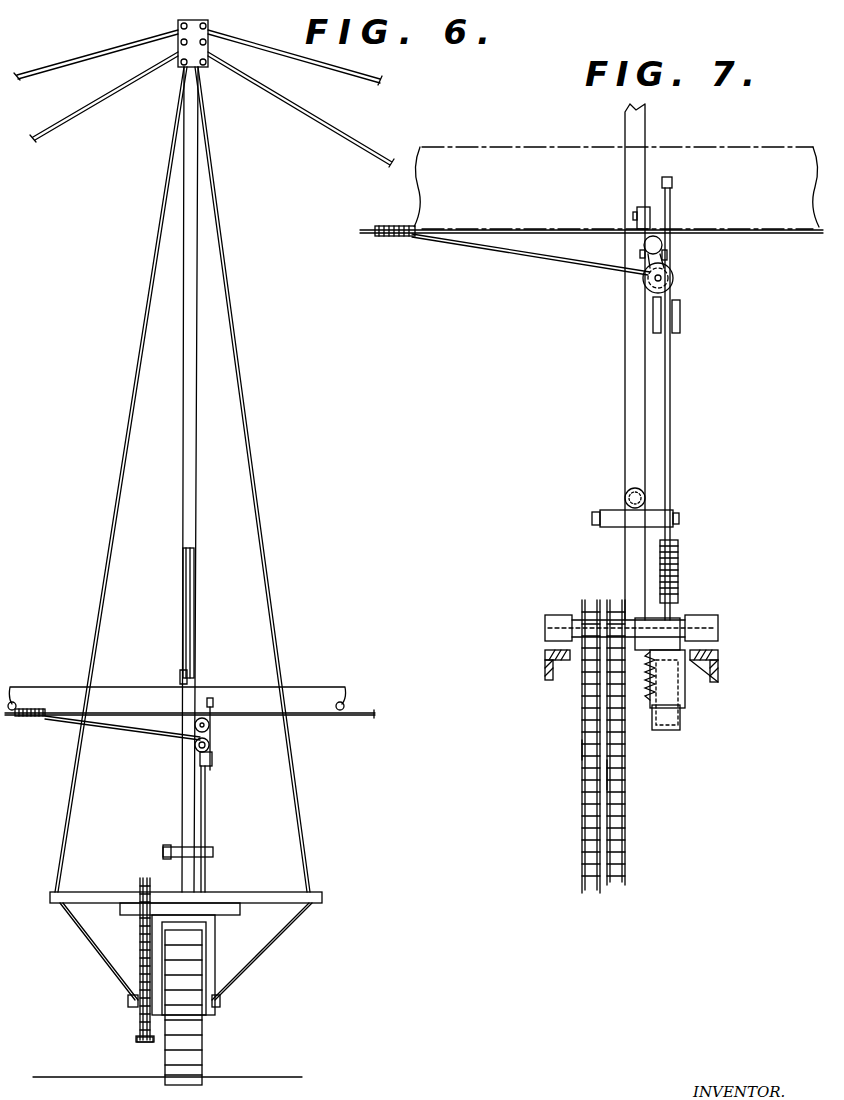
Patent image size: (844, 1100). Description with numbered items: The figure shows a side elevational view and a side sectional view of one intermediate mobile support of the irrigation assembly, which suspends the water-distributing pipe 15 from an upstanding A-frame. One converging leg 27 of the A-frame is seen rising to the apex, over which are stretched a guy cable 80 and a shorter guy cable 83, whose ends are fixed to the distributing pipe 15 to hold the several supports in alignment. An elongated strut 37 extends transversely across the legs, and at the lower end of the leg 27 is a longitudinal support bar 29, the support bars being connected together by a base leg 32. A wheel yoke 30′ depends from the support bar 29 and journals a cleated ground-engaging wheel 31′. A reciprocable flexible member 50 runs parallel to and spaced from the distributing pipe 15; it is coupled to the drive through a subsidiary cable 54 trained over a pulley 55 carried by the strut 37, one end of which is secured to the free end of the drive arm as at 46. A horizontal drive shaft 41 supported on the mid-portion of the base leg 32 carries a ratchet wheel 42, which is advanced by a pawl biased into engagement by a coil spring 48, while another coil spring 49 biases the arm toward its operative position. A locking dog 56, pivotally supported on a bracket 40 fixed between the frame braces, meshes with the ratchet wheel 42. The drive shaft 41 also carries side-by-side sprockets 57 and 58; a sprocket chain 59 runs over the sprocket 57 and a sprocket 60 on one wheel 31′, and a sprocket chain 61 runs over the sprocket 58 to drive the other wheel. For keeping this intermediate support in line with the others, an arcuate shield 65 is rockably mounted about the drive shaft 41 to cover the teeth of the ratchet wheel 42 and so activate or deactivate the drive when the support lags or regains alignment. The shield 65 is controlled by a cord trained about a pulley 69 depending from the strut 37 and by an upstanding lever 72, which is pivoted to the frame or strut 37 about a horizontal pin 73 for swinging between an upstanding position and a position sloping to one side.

In FIG. 6, the distributing pipe 15 is at (320, 690).
In FIG. 6, the leg 27 is at (196, 518).
In FIG. 6, the support bar 29 is at (290, 896).
In FIG. 6, the wheel yoke 30′ is at (210, 955).
In FIG. 6, the ground-engaging wheel 31′ is at (200, 1042).
In FIG. 7, the base leg 32 is at (719, 670).
In FIG. 6, the strut 37 is at (210, 725).
In FIG. 7, the strut 37 is at (640, 267).
In FIG. 7, the bracket 40 is at (626, 494).
In FIG. 7, the drive shaft 41 is at (720, 628).
In FIG. 7, the ratchet wheel 42 is at (688, 553).
In FIG. 7, the cable securing point 46 is at (680, 620).
In FIG. 7, the coil spring 48 is at (700, 651).
In FIG. 7, the coil spring 49 is at (645, 692).
In FIG. 6, the reciprocable flexible member 50 is at (330, 722).
In FIG. 7, the reciprocable flexible member 50 is at (452, 226).
In FIG. 6, the subsidiary cable 54 is at (210, 803).
In FIG. 7, the subsidiary cable 54 is at (592, 266).
In FIG. 6, the pulley 55 is at (214, 746).
In FIG. 6, the locking dog 56 is at (215, 857).
In FIG. 7, the locking dog 56 is at (688, 530).
In FIG. 7, the sprocket 57 is at (590, 602).
In FIG. 7, the sprocket 58 is at (616, 602).
In FIG. 6, the sprocket chain 59 is at (140, 955).
In FIG. 7, the sprocket chain 59 is at (580, 748).
In FIG. 6, the sprocket 60 is at (135, 1033).
In FIG. 7, the sprocket chain 61 is at (628, 783).
In FIG. 7, the arcuate shield 65 is at (685, 727).
In FIG. 6, the pulley 69 is at (214, 765).
In FIG. 7, the pulley 69 is at (681, 333).
In FIG. 6, the lever 72 is at (213, 700).
In FIG. 7, the lever 72 is at (675, 197).
In FIG. 7, the pin 73 is at (672, 246).
In FIG. 6, the cable 80 is at (63, 74).
In FIG. 6, the cable 83 is at (66, 140).